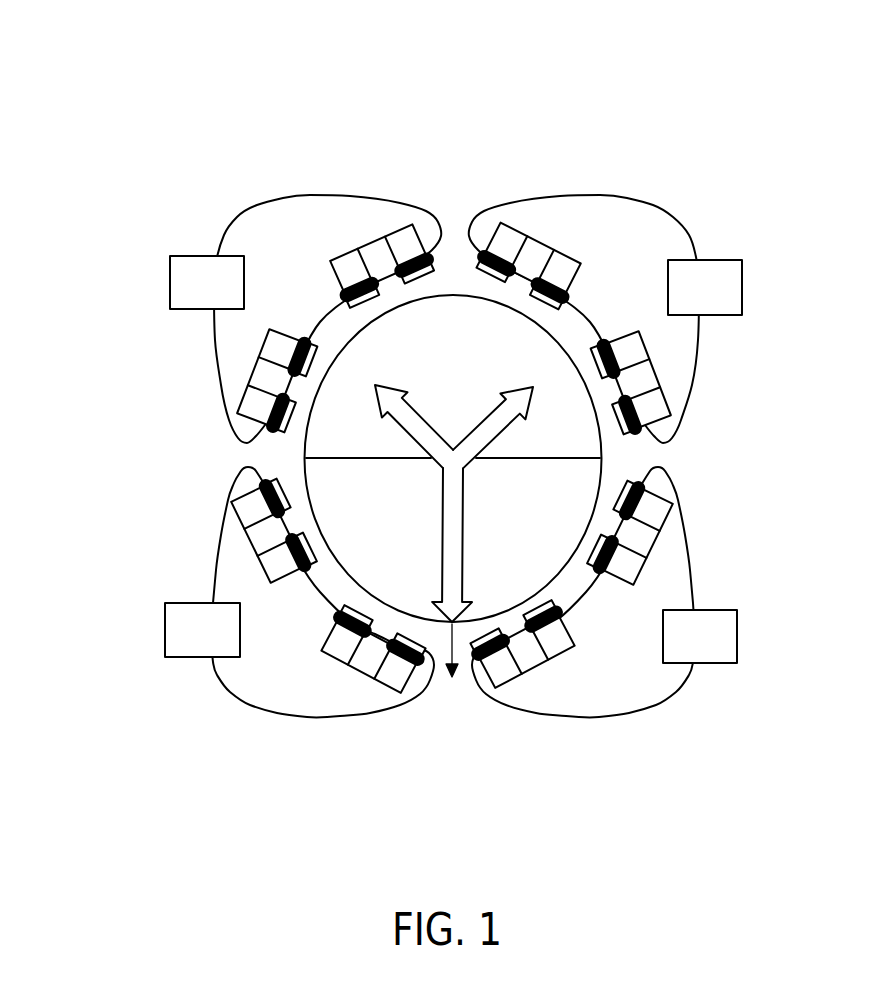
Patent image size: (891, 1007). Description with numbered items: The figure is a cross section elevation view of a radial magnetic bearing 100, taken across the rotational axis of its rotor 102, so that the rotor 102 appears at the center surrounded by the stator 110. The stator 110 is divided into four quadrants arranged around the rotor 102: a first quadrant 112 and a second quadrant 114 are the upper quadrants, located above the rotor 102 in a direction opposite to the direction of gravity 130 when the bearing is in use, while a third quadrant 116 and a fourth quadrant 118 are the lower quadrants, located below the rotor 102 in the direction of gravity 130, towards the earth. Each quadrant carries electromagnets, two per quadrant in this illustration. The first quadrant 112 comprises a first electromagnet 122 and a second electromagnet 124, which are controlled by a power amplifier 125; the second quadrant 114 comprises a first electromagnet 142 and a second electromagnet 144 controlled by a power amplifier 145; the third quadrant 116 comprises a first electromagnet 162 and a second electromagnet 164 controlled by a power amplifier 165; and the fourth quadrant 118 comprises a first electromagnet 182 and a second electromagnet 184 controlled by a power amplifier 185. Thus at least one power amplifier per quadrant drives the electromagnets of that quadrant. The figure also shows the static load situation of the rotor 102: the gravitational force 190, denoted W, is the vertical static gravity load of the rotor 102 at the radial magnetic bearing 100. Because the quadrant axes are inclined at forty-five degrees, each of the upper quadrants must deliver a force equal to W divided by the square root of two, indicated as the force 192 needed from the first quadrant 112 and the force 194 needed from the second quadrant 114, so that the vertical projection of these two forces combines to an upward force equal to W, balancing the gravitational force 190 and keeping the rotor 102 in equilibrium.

The radial magnetic bearing 100 is at (748, 133).
The rotor 102 is at (558, 572).
The stator 110 is at (686, 470).
The first quadrant 112 is at (143, 242).
The second quadrant 114 is at (772, 246).
The third quadrant 116 is at (763, 678).
The fourth quadrant 118 is at (137, 672).
The first electromagnet of the first quadrant 122 is at (243, 403).
The second electromagnet of the first quadrant 124 is at (388, 243).
The power amplifier 125 is at (194, 255).
The direction of gravity 130 is at (447, 652).
The first electromagnet of the second quadrant 142 is at (523, 250).
The second electromagnet of the second quadrant 144 is at (670, 405).
The power amplifier 145 is at (715, 260).
The first electromagnet of the third quadrant 162 is at (667, 518).
The second electromagnet of the third quadrant 164 is at (513, 690).
The power amplifier 165 is at (710, 663).
The first electromagnet of the fourth quadrant 182 is at (387, 690).
The second electromagnet of the fourth quadrant 184 is at (237, 515).
The power amplifier 185 is at (190, 660).
The gravitational force 190 is at (465, 532).
The force needed from first quadrant 192 is at (414, 406).
The force needed from second quadrant 194 is at (494, 407).